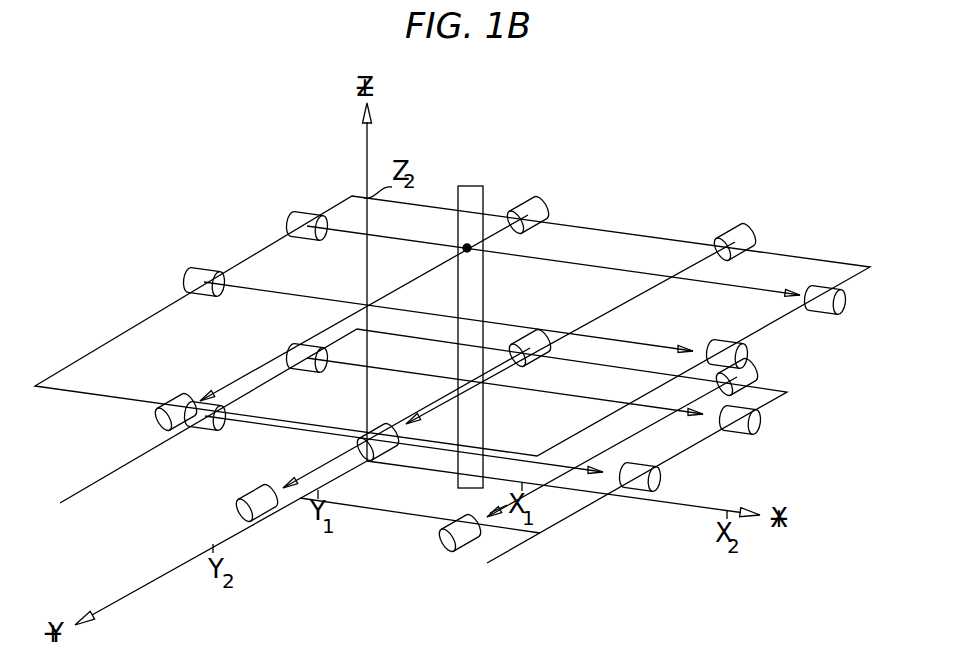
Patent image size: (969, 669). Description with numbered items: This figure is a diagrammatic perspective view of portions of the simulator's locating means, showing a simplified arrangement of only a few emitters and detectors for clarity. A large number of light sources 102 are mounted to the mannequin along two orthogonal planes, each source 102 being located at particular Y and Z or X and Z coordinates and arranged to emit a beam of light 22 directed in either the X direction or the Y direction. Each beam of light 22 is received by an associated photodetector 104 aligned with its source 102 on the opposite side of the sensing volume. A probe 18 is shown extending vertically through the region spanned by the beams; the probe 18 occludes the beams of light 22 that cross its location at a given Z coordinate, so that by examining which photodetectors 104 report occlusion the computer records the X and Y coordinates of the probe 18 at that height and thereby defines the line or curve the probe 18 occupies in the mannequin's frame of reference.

The probe 18 is at (470, 187).
The beam of light 22 is at (530, 316).
The light source 102 is at (438, 333).
The photodetector 104 is at (463, 455).